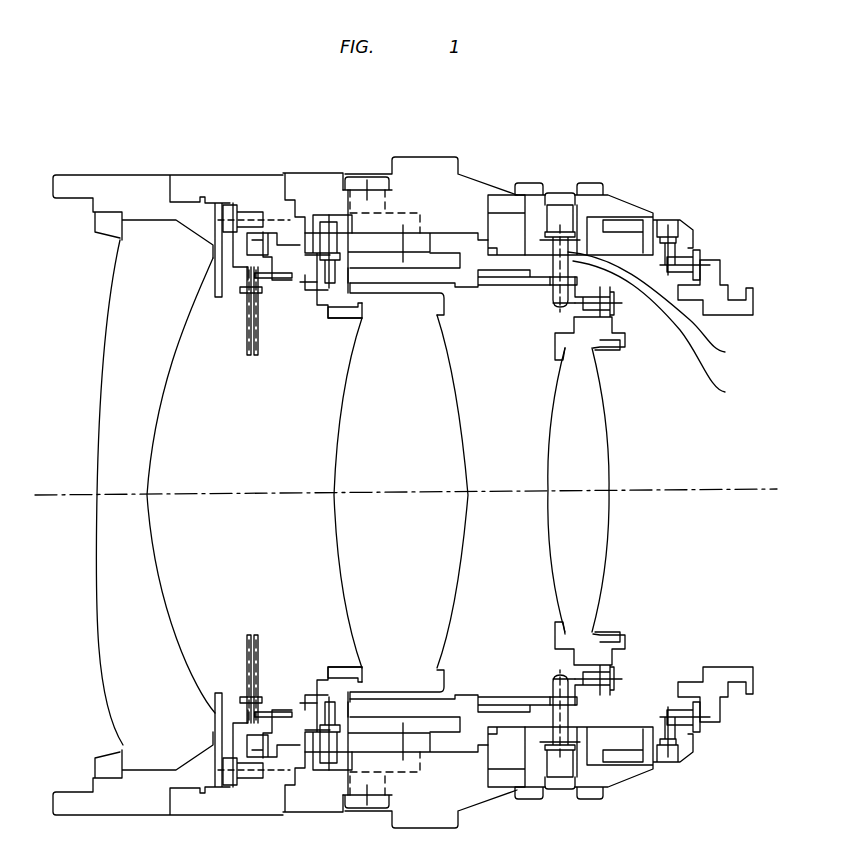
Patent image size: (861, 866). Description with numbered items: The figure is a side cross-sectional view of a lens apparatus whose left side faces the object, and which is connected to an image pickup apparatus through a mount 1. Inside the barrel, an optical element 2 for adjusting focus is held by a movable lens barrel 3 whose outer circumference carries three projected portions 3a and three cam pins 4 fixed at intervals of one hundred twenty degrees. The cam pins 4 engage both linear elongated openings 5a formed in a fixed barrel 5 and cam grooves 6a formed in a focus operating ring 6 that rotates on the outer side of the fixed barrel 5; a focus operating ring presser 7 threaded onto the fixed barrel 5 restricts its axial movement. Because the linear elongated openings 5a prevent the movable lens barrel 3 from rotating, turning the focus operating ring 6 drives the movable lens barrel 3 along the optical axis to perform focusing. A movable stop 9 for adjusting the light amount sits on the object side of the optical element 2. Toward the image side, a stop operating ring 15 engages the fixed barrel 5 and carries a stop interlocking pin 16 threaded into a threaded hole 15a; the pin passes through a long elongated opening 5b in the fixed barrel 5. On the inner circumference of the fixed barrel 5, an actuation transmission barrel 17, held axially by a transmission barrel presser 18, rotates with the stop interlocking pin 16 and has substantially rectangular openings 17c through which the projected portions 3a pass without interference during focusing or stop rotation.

The mount 1 is at (720, 290).
The optical element 2 is at (353, 556).
The movable lens barrel 3 is at (398, 305).
The projected portion 3a is at (318, 277).
The cam pin 4 is at (318, 225).
The fixed barrel 5 is at (185, 180).
The linear elongated opening 5a is at (378, 240).
The long elongated opening 5b is at (661, 331).
The focus operating ring 6 is at (440, 223).
The cam groove 6a is at (335, 227).
The focus operating ring presser 7 is at (498, 243).
The movable stop 9 is at (250, 347).
The stop operating ring 15 is at (615, 207).
The threaded hole 15a is at (664, 307).
The stop interlocking pin 16 is at (557, 292).
The actuation transmission barrel 17 is at (487, 283).
The opening 17c is at (383, 277).
The transmission barrel presser 18 is at (260, 223).